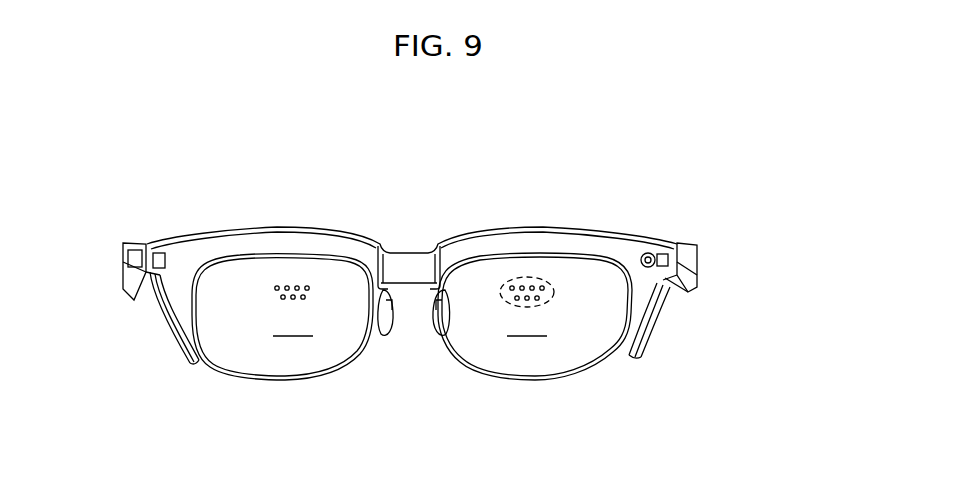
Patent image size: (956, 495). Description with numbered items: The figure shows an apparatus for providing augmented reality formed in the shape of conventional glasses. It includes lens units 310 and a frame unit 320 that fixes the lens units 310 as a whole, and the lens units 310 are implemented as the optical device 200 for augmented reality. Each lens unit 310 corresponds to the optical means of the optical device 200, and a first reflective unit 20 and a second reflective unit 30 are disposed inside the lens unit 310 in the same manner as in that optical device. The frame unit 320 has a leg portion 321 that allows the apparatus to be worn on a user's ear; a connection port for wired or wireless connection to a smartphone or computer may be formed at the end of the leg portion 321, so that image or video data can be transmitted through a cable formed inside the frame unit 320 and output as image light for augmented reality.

The frame unit 320 is at (463, 237).
The second reflective unit 30 is at (530, 277).
The optical device for augmented reality 200 is at (483, 340).
The first reflective unit 20 is at (527, 337).
The lens unit 310 is at (610, 363).
The leg portion 321 is at (655, 330).